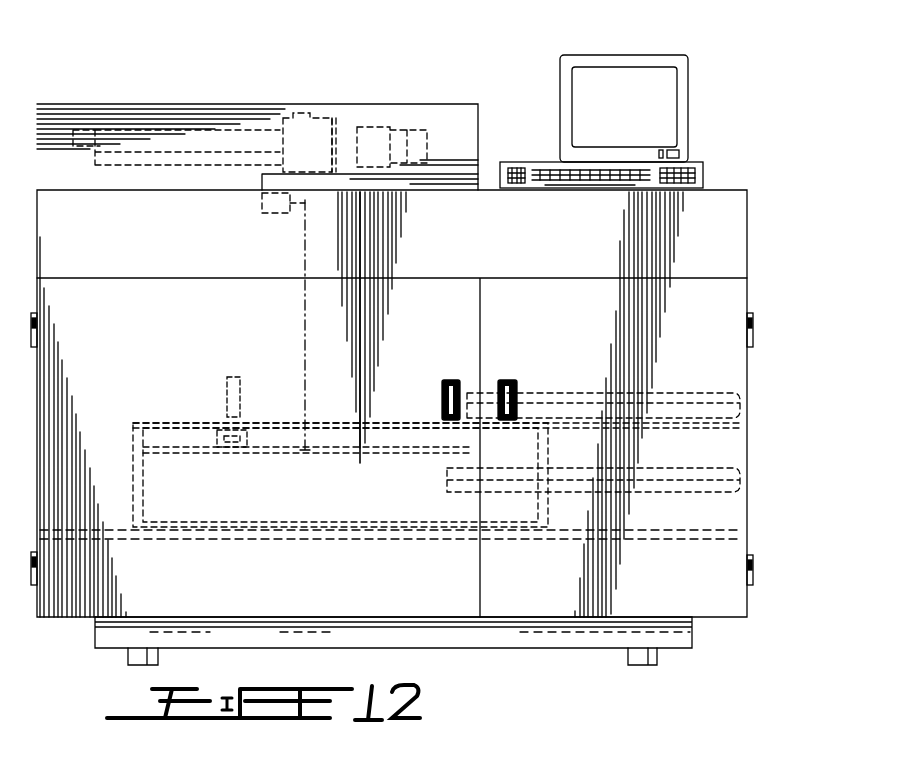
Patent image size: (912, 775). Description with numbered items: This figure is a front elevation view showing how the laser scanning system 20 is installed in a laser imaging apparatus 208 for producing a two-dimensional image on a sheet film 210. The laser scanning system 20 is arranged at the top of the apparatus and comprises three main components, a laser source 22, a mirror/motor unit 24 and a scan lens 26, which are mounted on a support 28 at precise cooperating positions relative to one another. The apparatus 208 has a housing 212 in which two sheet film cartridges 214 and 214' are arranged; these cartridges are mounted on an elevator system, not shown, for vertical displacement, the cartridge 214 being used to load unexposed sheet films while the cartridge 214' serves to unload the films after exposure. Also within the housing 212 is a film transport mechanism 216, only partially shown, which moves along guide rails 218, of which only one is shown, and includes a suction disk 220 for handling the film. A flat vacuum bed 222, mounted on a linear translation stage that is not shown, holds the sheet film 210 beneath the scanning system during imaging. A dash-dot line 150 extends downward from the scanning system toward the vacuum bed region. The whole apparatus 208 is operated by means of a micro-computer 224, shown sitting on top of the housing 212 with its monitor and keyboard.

The laser imaging apparatus 208 is at (110, 92).
The laser source 22 is at (178, 143).
The laser scanning system 20 is at (287, 110).
The support 28 is at (318, 136).
The mirror/motor unit 24 is at (373, 132).
The scan lens 26 is at (277, 212).
The drain line 150 is at (303, 255).
The micro-computer 224 is at (690, 97).
The housing 212 is at (748, 245).
The guide rails 218 is at (168, 424).
The film transport mechanism 216 is at (240, 390).
The suction disk 220 is at (259, 431).
The flat vacuum bed 222 is at (275, 453).
The sheet film 210 is at (388, 446).
The sheet film cartridge 214 is at (632, 390).
The sheet film cartridge 214' is at (625, 468).